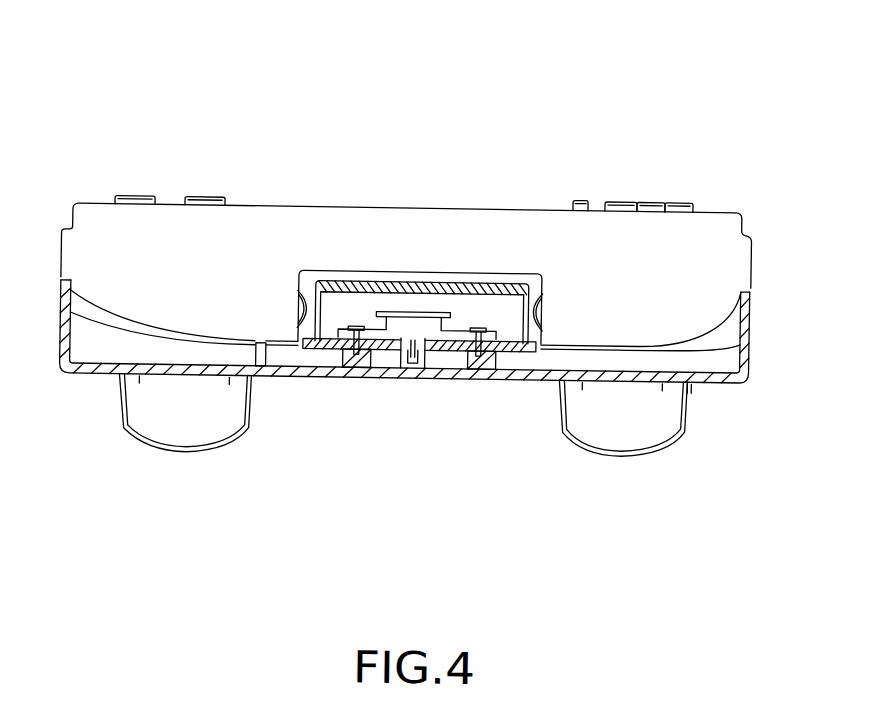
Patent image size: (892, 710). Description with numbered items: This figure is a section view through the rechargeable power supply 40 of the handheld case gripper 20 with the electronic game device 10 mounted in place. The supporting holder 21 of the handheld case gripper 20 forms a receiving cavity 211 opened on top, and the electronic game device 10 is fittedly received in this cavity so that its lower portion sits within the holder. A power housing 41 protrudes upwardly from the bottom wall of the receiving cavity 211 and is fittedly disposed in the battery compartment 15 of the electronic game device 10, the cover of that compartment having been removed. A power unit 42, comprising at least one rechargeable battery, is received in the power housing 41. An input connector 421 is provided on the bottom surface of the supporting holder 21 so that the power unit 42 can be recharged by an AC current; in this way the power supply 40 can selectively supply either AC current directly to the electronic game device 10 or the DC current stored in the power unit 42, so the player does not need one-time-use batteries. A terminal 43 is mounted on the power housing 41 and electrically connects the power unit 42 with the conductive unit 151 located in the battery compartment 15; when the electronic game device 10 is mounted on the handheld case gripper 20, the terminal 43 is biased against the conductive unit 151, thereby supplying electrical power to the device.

The electronic game device 10 is at (552, 225).
The battery compartment 15 is at (444, 272).
The conductive unit 151 is at (293, 305).
The handheld case gripper 20 is at (708, 398).
The supporting holder 21 is at (718, 345).
The receiving cavity 211 is at (695, 327).
The rechargeable power supply 40 is at (405, 504).
The power housing 41 is at (282, 374).
The power unit 42 is at (358, 301).
The input connector 421 is at (410, 360).
The terminal 43 is at (528, 343).